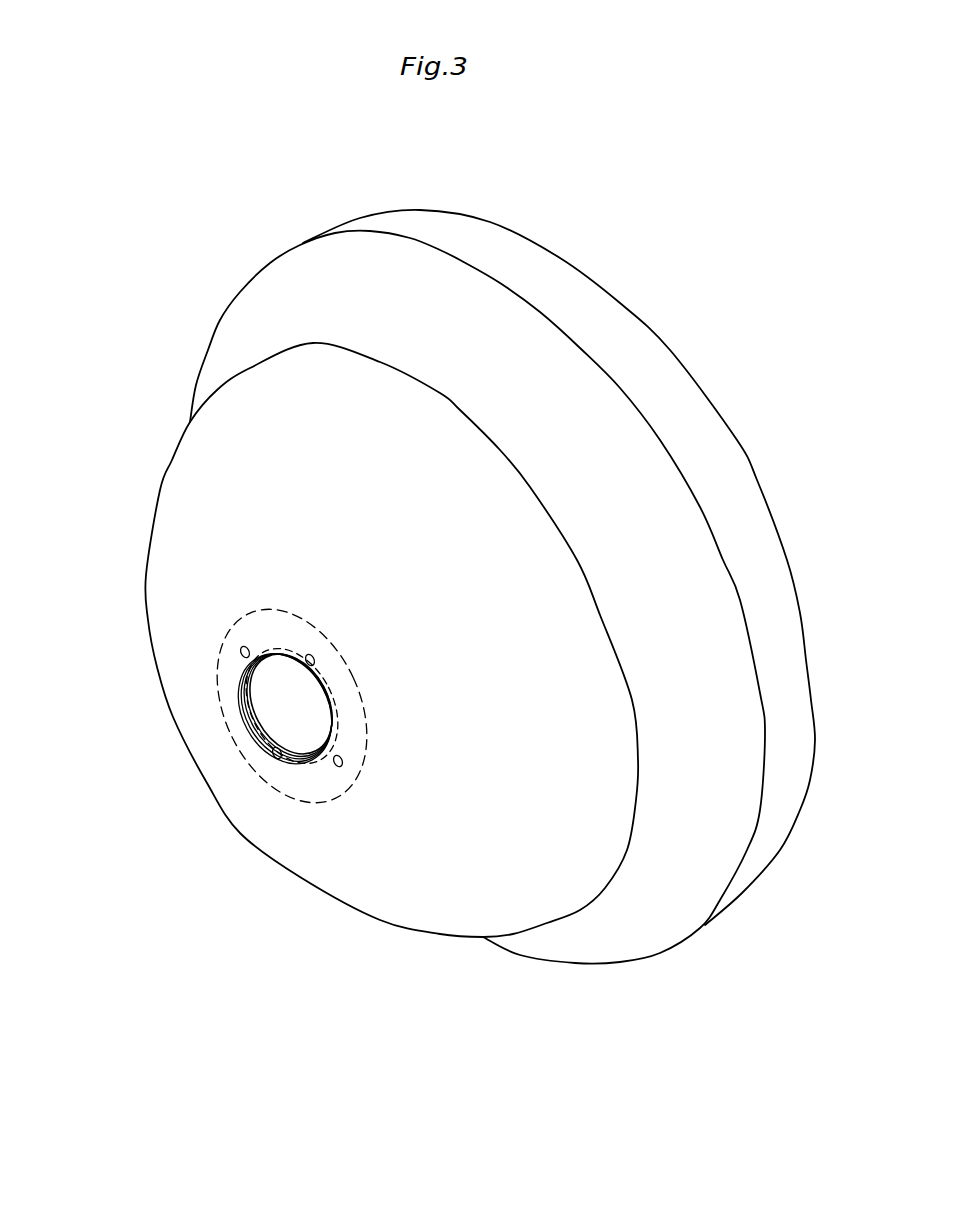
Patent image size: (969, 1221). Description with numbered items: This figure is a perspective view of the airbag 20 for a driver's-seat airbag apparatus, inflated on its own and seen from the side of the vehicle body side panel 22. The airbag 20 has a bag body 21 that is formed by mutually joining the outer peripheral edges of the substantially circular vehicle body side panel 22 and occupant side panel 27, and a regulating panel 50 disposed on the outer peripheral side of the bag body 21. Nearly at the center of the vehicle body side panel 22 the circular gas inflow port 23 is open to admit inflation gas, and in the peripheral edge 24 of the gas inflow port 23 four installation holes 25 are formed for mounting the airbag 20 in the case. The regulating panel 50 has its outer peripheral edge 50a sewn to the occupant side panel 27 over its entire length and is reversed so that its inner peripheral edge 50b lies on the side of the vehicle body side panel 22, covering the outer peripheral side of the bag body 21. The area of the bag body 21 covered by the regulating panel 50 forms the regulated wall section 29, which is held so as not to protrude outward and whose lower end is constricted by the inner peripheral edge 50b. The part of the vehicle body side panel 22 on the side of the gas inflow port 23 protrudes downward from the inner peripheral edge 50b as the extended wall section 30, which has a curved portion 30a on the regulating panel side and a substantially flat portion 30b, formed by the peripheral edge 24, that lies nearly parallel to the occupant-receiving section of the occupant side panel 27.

The airbag 20 is at (718, 295).
The bag body 21 is at (597, 270).
The vehicle body side panel 22 is at (417, 923).
The gas inflow port 23 is at (290, 657).
The peripheral edge 24 is at (327, 785).
The installation holes 25 is at (343, 760).
The occupant side panel 27 is at (713, 425).
The regulated wall section 29 is at (697, 873).
The extended wall section 30 is at (473, 923).
The curved portion 30a is at (233, 412).
The flat portion 30b is at (193, 600).
The regulating panel 50 is at (643, 935).
The outer peripheral edge 50a is at (757, 660).
The inner peripheral edge 50b is at (625, 687).